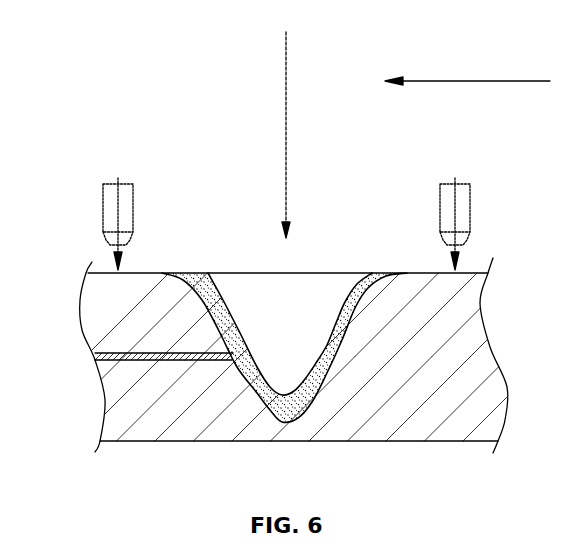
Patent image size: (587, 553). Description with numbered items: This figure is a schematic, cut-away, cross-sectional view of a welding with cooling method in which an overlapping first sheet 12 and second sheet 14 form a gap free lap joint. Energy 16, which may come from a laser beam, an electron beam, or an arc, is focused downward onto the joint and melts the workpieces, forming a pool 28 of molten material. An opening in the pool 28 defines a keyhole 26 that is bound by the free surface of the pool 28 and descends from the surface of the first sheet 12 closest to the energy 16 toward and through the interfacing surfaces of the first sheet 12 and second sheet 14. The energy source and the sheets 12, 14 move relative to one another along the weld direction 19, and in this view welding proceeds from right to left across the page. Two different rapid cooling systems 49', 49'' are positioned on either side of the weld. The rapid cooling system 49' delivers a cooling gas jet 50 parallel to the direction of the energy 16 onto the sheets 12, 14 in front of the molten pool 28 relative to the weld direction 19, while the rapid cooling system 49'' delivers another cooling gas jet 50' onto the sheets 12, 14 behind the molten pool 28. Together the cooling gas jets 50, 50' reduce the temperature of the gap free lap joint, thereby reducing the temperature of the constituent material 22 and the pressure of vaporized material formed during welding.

The first sheet 12 is at (122, 313).
The second sheet 14 is at (137, 395).
The energy 16 is at (286, 87).
The weld direction 19 is at (468, 81).
The constituent material 22 is at (125, 357).
The keyhole 26 is at (313, 292).
The pool of molten material 28 is at (370, 289).
The rapid cooling system 49' is at (163, 214).
The rapid cooling system 49'' is at (503, 214).
The cooling gas jet 50 is at (75, 224).
The cooling gas jet 50' is at (510, 224).